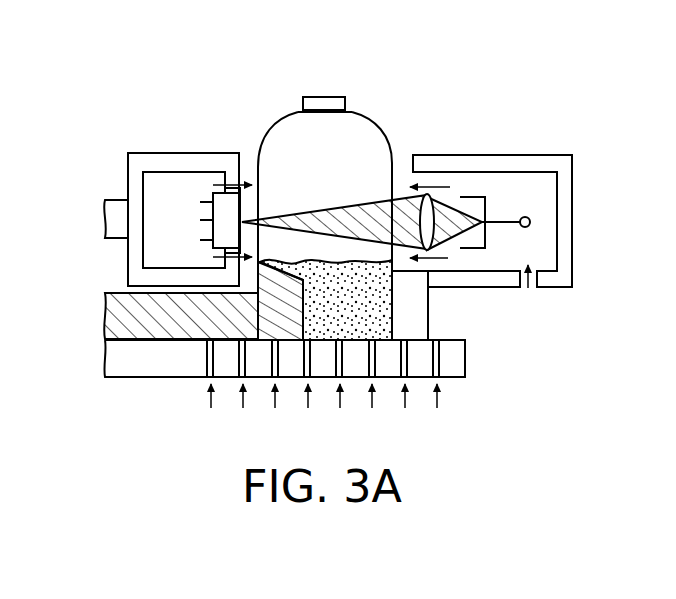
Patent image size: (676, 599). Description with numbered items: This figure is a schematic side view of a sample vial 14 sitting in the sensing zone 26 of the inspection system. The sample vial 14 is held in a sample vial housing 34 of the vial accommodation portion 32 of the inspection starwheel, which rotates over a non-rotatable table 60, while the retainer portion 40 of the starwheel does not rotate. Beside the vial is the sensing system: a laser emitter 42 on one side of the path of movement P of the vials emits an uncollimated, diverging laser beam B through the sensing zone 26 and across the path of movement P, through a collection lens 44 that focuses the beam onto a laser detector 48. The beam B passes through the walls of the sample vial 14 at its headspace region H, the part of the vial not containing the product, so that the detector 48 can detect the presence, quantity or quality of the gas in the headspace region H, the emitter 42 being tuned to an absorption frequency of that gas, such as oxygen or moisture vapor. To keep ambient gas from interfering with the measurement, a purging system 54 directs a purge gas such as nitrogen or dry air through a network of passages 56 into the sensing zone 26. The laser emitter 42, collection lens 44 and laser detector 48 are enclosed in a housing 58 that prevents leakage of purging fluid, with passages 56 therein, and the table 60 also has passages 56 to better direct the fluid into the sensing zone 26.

The sensing zone 26 is at (285, 100).
The sample vial 14 is at (366, 143).
The headspace region H is at (280, 162).
The laser beam B is at (323, 215).
The collection lens 44 is at (432, 208).
The laser detector 48 is at (503, 220).
The housing 58 is at (133, 262).
The purging system 54 is at (152, 180).
The laser emitter 42 is at (220, 210).
The passages 56 is at (252, 182).
The vial accommodation portion 32 is at (113, 303).
The sample vial housing 34 is at (283, 330).
The path of movement P is at (382, 328).
The retainer portion 40 is at (420, 311).
The non-rotatable table 60 is at (455, 355).